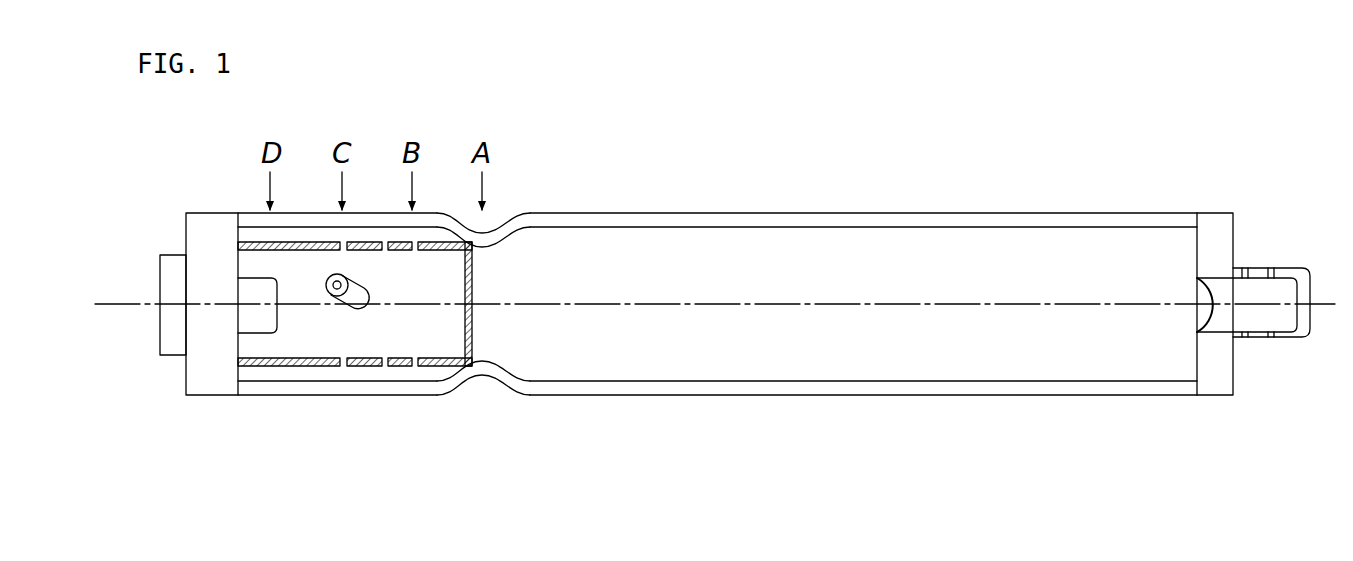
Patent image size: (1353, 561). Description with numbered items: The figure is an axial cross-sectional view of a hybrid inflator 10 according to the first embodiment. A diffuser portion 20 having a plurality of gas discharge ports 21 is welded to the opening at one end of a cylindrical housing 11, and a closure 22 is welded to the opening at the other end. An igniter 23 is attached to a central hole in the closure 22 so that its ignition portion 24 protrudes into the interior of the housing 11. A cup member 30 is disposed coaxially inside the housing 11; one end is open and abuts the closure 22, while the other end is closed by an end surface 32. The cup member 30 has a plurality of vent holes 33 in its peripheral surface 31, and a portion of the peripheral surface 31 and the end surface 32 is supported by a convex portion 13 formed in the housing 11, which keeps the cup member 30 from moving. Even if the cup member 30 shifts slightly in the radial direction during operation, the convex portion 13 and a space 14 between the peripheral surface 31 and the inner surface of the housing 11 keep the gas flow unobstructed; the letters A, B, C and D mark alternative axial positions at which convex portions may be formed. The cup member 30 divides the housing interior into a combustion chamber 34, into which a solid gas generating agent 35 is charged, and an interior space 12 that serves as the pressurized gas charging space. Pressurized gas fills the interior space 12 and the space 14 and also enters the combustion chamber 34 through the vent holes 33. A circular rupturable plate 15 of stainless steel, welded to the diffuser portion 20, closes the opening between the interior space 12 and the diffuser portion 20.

The hybrid inflator 10 is at (705, 168).
The cylindrical housing 11 is at (890, 222).
The interior space 12 is at (718, 282).
The convex portion 13 is at (486, 245).
The space 14 is at (412, 373).
The circular rupturable plate 15 is at (1192, 320).
The diffuser portion 20 is at (1210, 225).
The gas discharge port 21 is at (1270, 339).
The closure 22 is at (186, 235).
The igniter 23 is at (170, 272).
The ignition portion 24 is at (248, 320).
The cup member 30 is at (290, 368).
The peripheral surface 31 is at (325, 364).
The end surface 32 is at (473, 326).
The vent hole 33 is at (383, 364).
The combustion chamber 34 is at (326, 348).
The solid gas generating agent 35 is at (356, 288).